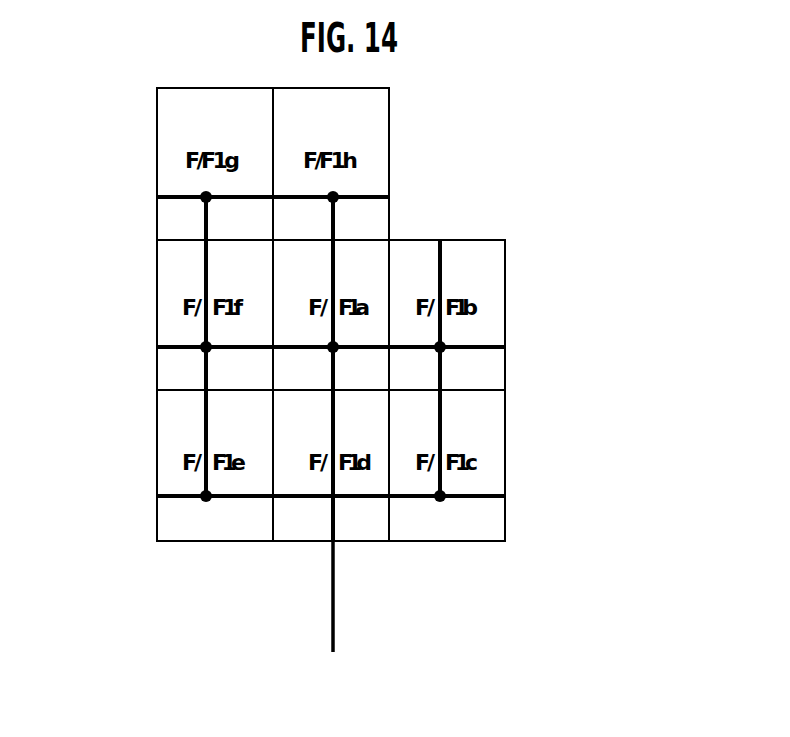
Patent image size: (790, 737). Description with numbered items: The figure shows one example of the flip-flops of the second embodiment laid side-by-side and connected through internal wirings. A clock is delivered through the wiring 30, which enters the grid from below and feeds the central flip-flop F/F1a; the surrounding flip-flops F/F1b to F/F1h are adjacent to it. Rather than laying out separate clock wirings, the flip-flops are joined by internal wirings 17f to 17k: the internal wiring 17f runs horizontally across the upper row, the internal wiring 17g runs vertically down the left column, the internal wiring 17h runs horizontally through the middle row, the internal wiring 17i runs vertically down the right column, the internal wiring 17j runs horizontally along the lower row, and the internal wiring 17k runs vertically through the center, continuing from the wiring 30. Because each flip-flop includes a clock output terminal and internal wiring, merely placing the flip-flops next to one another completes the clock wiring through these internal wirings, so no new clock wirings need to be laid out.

The internal wiring 17f is at (368, 194).
The internal wiring 17g is at (205, 273).
The internal wiring 17h is at (491, 344).
The internal wiring 17i is at (440, 413).
The internal wiring 17j is at (480, 498).
The internal wiring 17k is at (333, 222).
The wiring 30 is at (333, 610).